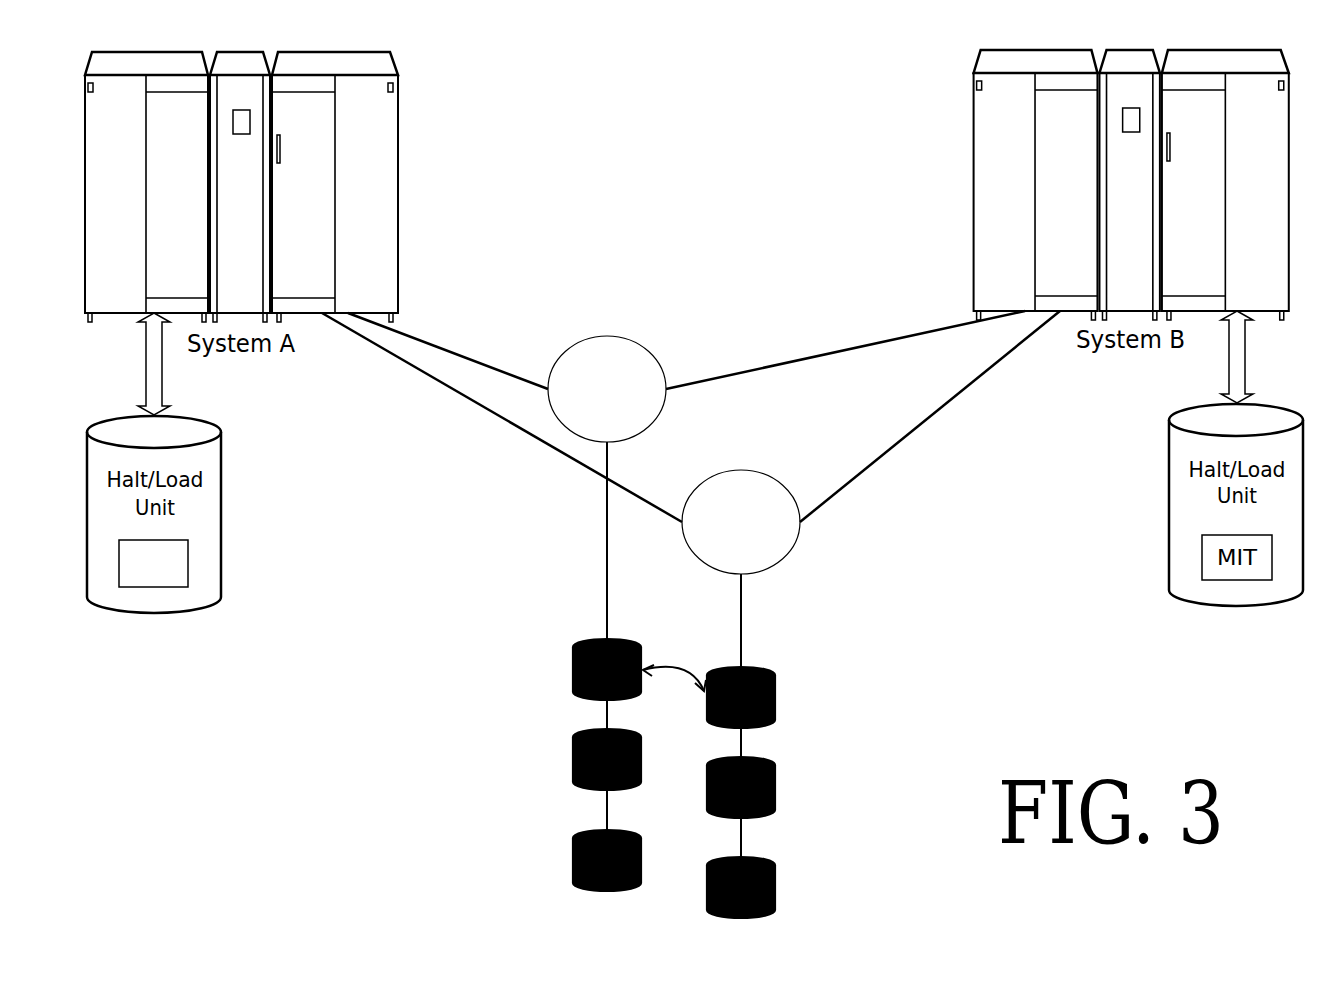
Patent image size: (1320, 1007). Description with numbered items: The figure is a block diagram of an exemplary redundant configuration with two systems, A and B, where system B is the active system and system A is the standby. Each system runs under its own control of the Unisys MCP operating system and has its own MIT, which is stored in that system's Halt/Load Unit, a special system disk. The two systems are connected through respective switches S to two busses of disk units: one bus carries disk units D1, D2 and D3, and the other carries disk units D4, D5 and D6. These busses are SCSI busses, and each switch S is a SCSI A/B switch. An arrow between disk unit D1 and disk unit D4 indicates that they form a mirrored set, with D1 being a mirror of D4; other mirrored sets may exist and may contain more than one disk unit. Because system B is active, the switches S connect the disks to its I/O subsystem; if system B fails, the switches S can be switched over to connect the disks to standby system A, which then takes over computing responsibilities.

The disk unit D1 is at (607, 669).
The disk unit D2 is at (607, 759).
The disk unit D3 is at (607, 860).
The disk unit D4 is at (741, 697).
The disk unit D5 is at (741, 787).
The disk unit D6 is at (741, 887).
The switch S is at (674, 455).
The element MIT is at (153, 563).